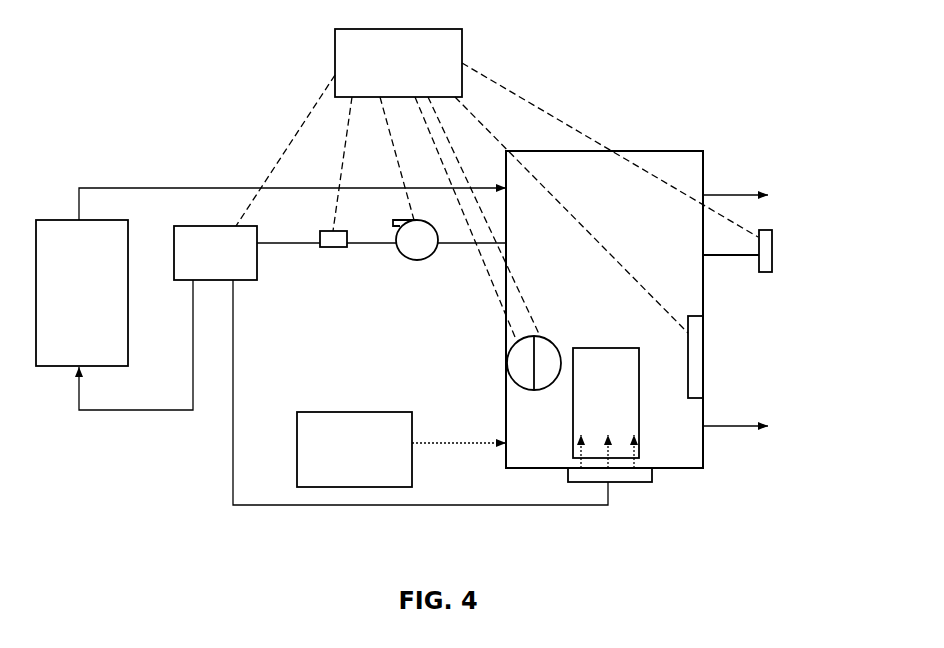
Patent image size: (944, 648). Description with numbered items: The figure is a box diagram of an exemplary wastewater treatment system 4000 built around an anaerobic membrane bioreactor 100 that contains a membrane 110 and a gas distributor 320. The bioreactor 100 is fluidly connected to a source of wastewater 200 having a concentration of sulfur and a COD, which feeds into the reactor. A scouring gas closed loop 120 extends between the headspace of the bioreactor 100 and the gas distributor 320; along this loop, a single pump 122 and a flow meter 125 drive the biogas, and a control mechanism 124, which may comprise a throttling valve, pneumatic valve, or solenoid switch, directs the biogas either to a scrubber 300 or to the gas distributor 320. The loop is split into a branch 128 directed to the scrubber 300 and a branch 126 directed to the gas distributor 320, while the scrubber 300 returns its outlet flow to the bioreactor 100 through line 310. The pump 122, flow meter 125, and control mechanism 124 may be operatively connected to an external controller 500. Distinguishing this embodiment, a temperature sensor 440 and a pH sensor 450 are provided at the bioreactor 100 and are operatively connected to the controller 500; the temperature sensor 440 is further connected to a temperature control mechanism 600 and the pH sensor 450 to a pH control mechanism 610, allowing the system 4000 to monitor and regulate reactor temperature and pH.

The wastewater treatment system 4000 is at (205, 97).
The anaerobic membrane bioreactor 100 is at (588, 311).
The membrane 110 is at (606, 408).
The scouring gas closed loop 120 is at (283, 245).
The pump 122 is at (425, 259).
The control mechanism 124 is at (215, 253).
The flow meter 125 is at (335, 248).
The branch 126 is at (233, 423).
The branch 128 is at (137, 412).
The source of wastewater 200 is at (401, 449).
The scrubber 300 is at (82, 293).
The line 310 is at (108, 187).
The gas distributor 320 is at (582, 483).
The temperature sensor 440 is at (520, 361).
The pH sensor 450 is at (547, 359).
The controller 500 is at (497, 183).
The temperature control mechanism 600 is at (703, 367).
The pH control mechanism 610 is at (773, 263).